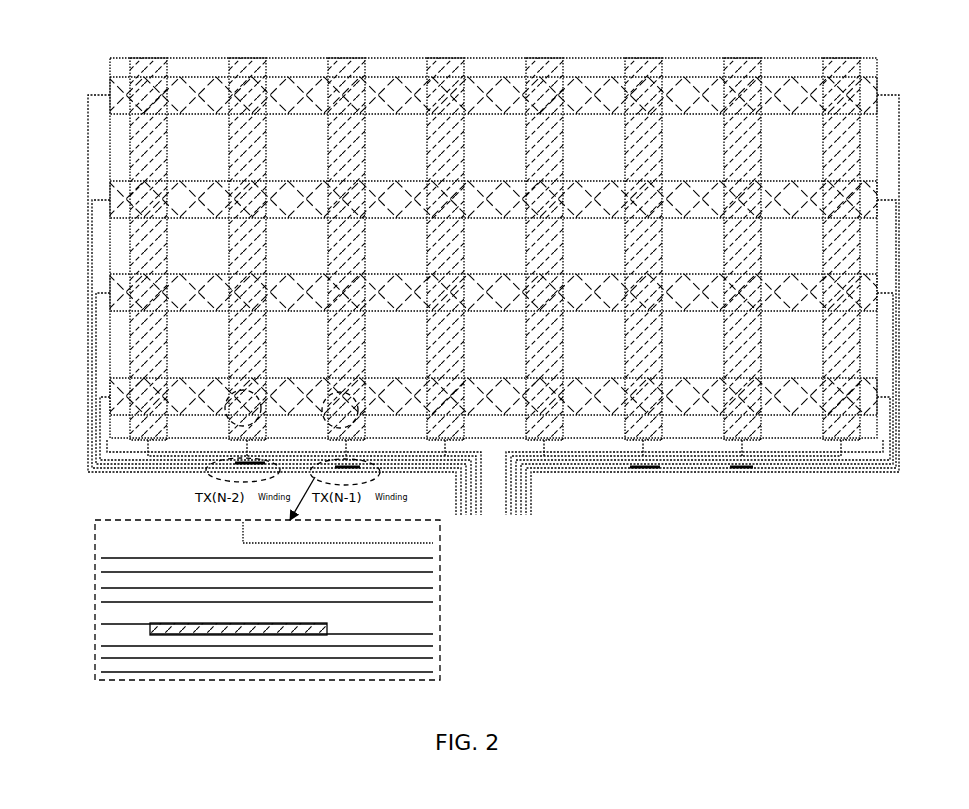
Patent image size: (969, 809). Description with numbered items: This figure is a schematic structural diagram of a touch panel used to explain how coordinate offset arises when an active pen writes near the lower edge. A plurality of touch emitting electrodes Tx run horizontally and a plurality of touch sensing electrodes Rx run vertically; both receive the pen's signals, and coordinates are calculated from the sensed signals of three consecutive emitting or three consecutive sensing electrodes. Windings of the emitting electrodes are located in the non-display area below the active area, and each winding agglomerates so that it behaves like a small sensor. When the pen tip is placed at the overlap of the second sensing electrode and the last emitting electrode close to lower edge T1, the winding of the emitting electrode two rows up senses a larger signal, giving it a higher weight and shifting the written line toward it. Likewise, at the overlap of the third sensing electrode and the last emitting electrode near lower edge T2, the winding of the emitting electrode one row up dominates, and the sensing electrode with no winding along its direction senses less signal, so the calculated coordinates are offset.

The lower edge position T1 is at (220, 405).
The lower edge position T2 is at (368, 405).